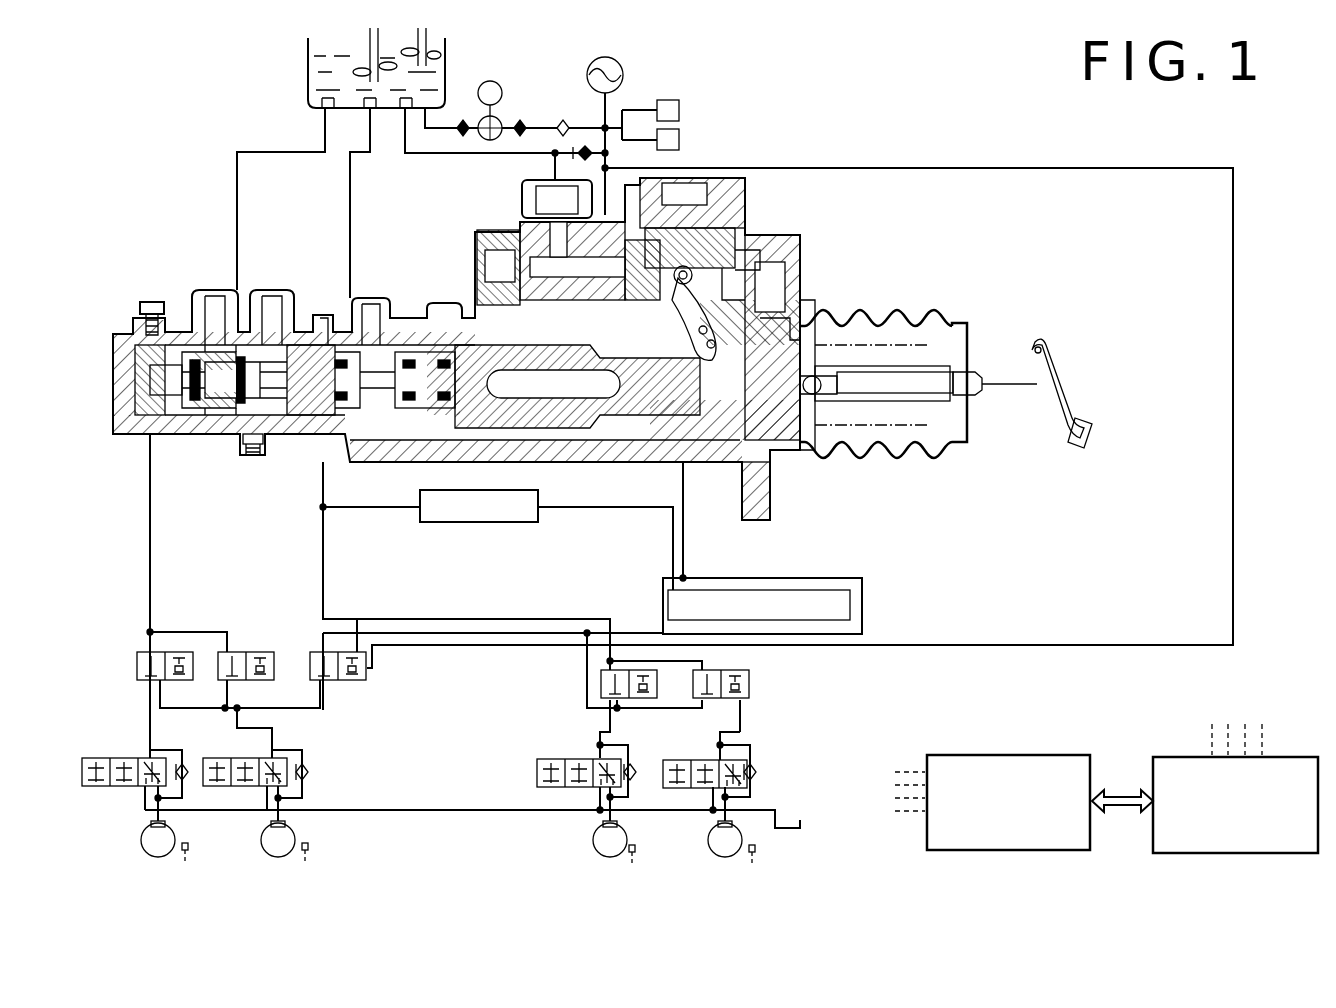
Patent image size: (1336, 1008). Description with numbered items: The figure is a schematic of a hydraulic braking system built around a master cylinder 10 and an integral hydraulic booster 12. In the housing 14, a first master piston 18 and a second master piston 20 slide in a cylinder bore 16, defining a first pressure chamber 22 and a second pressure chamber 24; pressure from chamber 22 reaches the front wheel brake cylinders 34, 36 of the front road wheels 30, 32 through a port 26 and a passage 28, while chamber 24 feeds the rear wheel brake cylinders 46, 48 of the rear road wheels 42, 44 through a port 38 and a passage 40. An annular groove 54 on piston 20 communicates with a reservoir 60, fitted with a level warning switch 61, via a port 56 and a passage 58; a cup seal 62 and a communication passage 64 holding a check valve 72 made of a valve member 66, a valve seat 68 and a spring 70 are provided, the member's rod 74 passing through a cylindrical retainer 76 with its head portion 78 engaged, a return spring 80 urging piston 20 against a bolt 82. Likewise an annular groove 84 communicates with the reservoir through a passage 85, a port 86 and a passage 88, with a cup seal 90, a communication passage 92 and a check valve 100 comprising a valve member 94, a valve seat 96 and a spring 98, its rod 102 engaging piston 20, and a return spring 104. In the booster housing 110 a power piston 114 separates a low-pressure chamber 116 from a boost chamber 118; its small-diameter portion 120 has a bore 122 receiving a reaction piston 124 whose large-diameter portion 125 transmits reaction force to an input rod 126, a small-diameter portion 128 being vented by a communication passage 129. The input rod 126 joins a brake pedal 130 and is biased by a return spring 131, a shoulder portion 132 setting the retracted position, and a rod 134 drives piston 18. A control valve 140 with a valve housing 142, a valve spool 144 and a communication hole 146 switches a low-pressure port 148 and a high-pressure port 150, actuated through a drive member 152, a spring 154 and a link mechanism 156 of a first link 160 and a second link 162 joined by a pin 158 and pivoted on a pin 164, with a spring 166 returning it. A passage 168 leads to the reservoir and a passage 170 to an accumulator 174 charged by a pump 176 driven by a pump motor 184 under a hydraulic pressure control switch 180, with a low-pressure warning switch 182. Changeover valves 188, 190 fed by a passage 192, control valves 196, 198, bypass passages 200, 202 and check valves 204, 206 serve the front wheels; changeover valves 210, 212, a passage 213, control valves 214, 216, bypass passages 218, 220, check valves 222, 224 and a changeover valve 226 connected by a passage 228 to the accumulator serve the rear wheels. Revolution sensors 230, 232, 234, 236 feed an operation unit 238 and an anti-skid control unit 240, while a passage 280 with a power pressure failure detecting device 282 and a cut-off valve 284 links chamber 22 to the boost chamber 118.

The master cylinder 10 is at (150, 240).
The hydraulic booster 12 is at (905, 495).
The housing 14 is at (307, 320).
The cylinder bore 16 is at (165, 305).
The first master piston 18 is at (605, 526).
The second master piston 20 is at (308, 462).
The first pressure chamber 22 is at (343, 462).
The second pressure chamber 24 is at (165, 435).
The port 26 is at (303, 434).
The passage 28 is at (325, 579).
The left front road wheel 30 is at (722, 848).
The right front road wheel 32 is at (598, 850).
The front wheel brake cylinder 34 is at (738, 840).
The front wheel brake cylinder 36 is at (598, 837).
The port 38 is at (138, 434).
The passage 40 is at (148, 532).
The left rear road wheel 42 is at (295, 835).
The right rear road wheel 44 is at (142, 848).
The rear wheel brake cylinder 46 is at (268, 842).
The rear wheel brake cylinder 48 is at (145, 832).
The annular groove 54 is at (283, 434).
The port 56 is at (222, 295).
The passage 58 is at (235, 170).
The reservoir 60 is at (305, 75).
The level warning switch 61 is at (440, 75).
The cup seal 62 is at (200, 330).
The communication passage 64 is at (252, 457).
The valve member 66 is at (228, 434).
The valve seat 68 is at (268, 310).
The spring 70 is at (195, 434).
The check valve 72 is at (245, 332).
The rod 74 is at (132, 357).
The cylindrical retainer 76 is at (133, 398).
The head portion 78 is at (150, 376).
The return spring 80 is at (122, 420).
The bolt 82 is at (243, 452).
The annular groove 84 is at (540, 442).
The passage 85 is at (412, 320).
The port 86 is at (362, 300).
The passage 88 is at (348, 192).
The cup seal 90 is at (405, 330).
The communication passage 92 is at (490, 442).
The valve member 94 is at (446, 330).
The valve seat 96 is at (450, 442).
The spring 98 is at (392, 462).
The check valve 100 is at (468, 312).
The rod 102 is at (374, 320).
The return spring 104 is at (325, 335).
The housing 110 is at (775, 465).
The power piston 114 is at (697, 462).
The low-pressure chamber 116 is at (600, 445).
The boost chamber 118 is at (752, 520).
The small-diameter portion 120 is at (890, 440).
The bore 122 is at (905, 345).
The reaction piston 124 is at (860, 345).
The large-diameter portion 125 is at (838, 446).
The input rod 126 is at (979, 396).
The small-diameter portion 128 is at (640, 442).
The communication passage 129 is at (657, 307).
The brake pedal 130 is at (1062, 408).
The return spring 131 is at (952, 326).
The shoulder portion 132 is at (795, 450).
The rod 134 is at (560, 445).
The control valve 140 is at (530, 228).
The valve housing 142 is at (500, 238).
The valve spool 144 is at (557, 199).
The communication hole 146 is at (527, 385).
The low-pressure port 148 is at (548, 182).
The high-pressure port 150 is at (612, 180).
The drive member 152 is at (770, 262).
The spring 154 is at (728, 222).
The link mechanism 156 is at (778, 300).
The pin 158 is at (778, 318).
The first link 160 is at (742, 278).
The second link 162 is at (755, 235).
The pin 164 is at (748, 256).
The spring 166 is at (742, 195).
The passage 168 is at (407, 156).
The passage 170 is at (607, 105).
The accumulator 174 is at (615, 60).
The pump 176 is at (503, 121).
The hydraulic pressure control switch 180 is at (679, 108).
The low-pressure warning switch 182 is at (679, 138).
The pump motor 184 is at (497, 82).
The solenoid operated changeover valve 188 is at (750, 684).
The solenoid operated changeover valve 190 is at (600, 688).
The passage 192 is at (583, 662).
The solenoid operated pressure control valve 196 is at (713, 752).
The solenoid operated pressure control valve 198 is at (535, 766).
The bypass passage 200 is at (758, 795).
The bypass passage 202 is at (617, 750).
The check valve 204 is at (760, 774).
The check valve 206 is at (640, 798).
The solenoid operated changeover valve 210 is at (256, 652).
The solenoid operated changeover valve 212 is at (137, 662).
The passage 213 is at (295, 712).
The solenoid operated pressure control valve 214 is at (255, 758).
The solenoid operated pressure control valve 216 is at (98, 758).
The bypass passage 218 is at (305, 798).
The bypass passage 220 is at (157, 752).
The check valve 222 is at (310, 775).
The check valve 224 is at (192, 798).
The solenoid operated changeover valve 226 is at (358, 632).
The passage 228 is at (995, 644).
The revolution sensor 230 is at (758, 862).
The revolution sensor 232 is at (635, 862).
The revolution sensor 234 is at (310, 855).
The revolution sensor 236 is at (182, 855).
The operation unit 238 is at (1010, 852).
The anti-skid control unit 240 is at (1238, 854).
The passage 280 is at (372, 509).
The power pressure failure detecting device 282 is at (472, 523).
The cut-off valve 284 is at (666, 598).